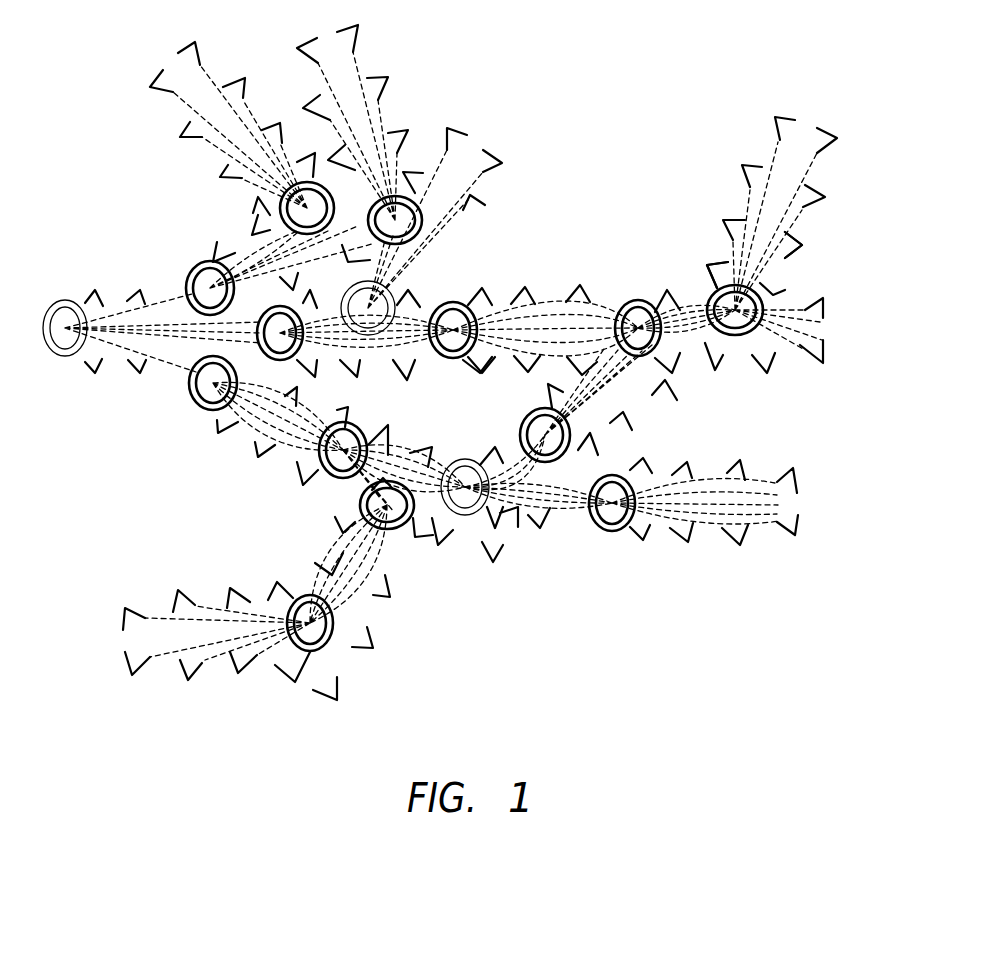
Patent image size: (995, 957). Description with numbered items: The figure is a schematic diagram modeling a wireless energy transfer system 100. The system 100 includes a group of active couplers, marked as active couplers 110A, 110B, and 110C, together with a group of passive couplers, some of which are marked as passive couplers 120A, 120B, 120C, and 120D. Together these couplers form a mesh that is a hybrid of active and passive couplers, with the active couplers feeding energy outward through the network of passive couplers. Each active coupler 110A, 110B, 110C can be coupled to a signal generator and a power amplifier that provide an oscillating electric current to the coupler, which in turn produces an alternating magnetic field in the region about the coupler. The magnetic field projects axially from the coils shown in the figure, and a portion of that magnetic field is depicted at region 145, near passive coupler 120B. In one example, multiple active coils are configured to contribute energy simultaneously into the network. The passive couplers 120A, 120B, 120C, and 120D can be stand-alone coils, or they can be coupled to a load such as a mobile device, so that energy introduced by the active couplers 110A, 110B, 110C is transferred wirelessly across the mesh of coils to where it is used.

The system 100 is at (607, 26).
The active coupler 110A is at (65, 300).
The active coupler 110B is at (375, 336).
The active coupler 110C is at (465, 517).
The passive coupler 120A is at (638, 299).
The passive coupler 120B is at (706, 300).
The passive coupler 120C is at (326, 650).
The passive coupler 120D is at (612, 532).
The region 145 is at (770, 275).